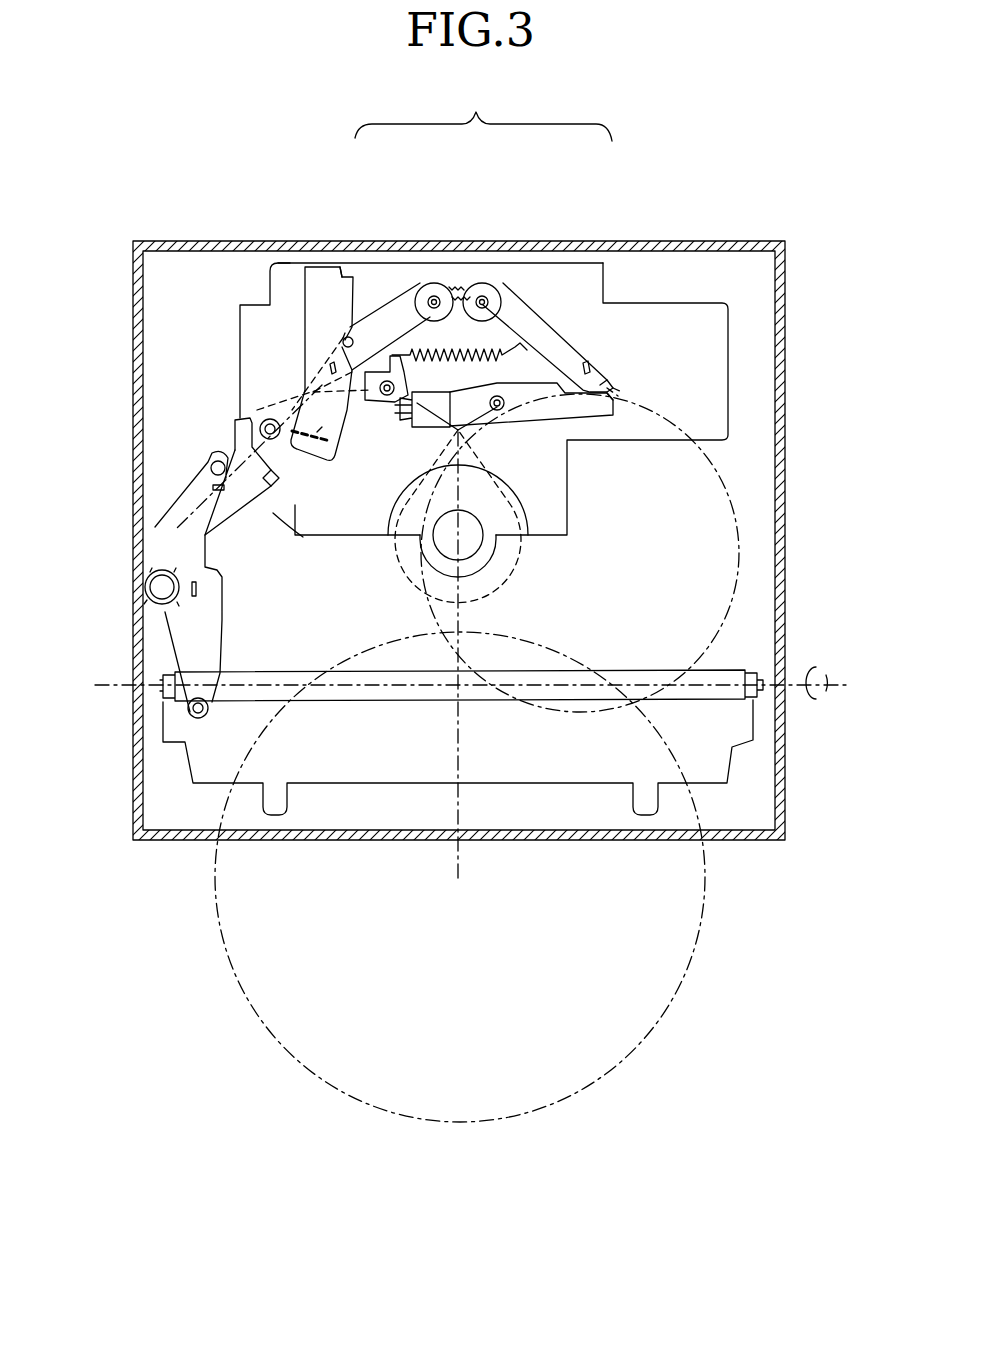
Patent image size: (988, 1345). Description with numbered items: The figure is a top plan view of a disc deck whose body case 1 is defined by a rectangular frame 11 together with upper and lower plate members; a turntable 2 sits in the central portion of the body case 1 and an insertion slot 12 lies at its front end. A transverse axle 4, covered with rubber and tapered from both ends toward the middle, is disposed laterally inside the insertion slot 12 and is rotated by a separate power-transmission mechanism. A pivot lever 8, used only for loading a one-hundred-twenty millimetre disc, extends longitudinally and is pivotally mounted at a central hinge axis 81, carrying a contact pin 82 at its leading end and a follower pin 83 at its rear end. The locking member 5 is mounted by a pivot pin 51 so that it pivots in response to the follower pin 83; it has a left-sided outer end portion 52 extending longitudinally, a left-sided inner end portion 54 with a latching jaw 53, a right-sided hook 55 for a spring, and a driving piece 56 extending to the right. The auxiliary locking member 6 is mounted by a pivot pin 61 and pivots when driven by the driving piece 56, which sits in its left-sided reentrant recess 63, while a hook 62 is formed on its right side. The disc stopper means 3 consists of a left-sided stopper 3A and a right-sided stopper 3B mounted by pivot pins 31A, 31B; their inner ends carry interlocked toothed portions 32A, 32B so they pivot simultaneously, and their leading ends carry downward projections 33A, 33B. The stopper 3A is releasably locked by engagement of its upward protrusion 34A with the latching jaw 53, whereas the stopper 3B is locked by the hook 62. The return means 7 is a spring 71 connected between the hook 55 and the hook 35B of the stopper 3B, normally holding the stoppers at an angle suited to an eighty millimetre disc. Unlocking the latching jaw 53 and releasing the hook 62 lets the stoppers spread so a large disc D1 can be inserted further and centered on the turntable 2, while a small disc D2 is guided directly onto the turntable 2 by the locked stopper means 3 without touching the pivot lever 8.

The body case 1 is at (806, 426).
The turntable 2 is at (420, 537).
The disc stopper means 3 is at (488, 104).
The left-sided stopper 3A is at (403, 262).
The right-sided stopper 3B is at (582, 275).
The transverse axle 4 is at (730, 673).
The locking member 5 is at (307, 342).
The auxiliary locking member 6 is at (560, 420).
The return means 7 is at (492, 255).
The spring 71 is at (512, 340).
The pivot lever 8 is at (163, 537).
The rectangular frame 11 is at (132, 804).
The insertion slot 12 is at (730, 835).
The pivot pin 31A is at (431, 296).
The pivot pin 31B is at (490, 294).
The toothed portion 32A is at (452, 285).
The toothed portion 32B is at (463, 291).
The downward projection 33A is at (305, 428).
The downward projection 33B is at (610, 382).
The protrusion 34A is at (282, 263).
The hook 35B is at (580, 340).
The pivot pin 51 is at (298, 506).
The left-sided outer end portion 52 is at (210, 450).
The latching jaw 53 is at (347, 335).
The left-sided inner end portion 54 is at (335, 275).
The hook 55 is at (352, 340).
The driving piece 56 is at (393, 410).
The pivot pin 61 is at (497, 407).
The hook 62 is at (615, 395).
The reentrant recess 63 is at (423, 426).
The central hinge axis 81 is at (148, 583).
The contact pin 82 is at (190, 712).
The follower pin 83 is at (257, 422).
The 120 mm disc D1 is at (635, 1057).
The 80 mm disc D2 is at (673, 428).